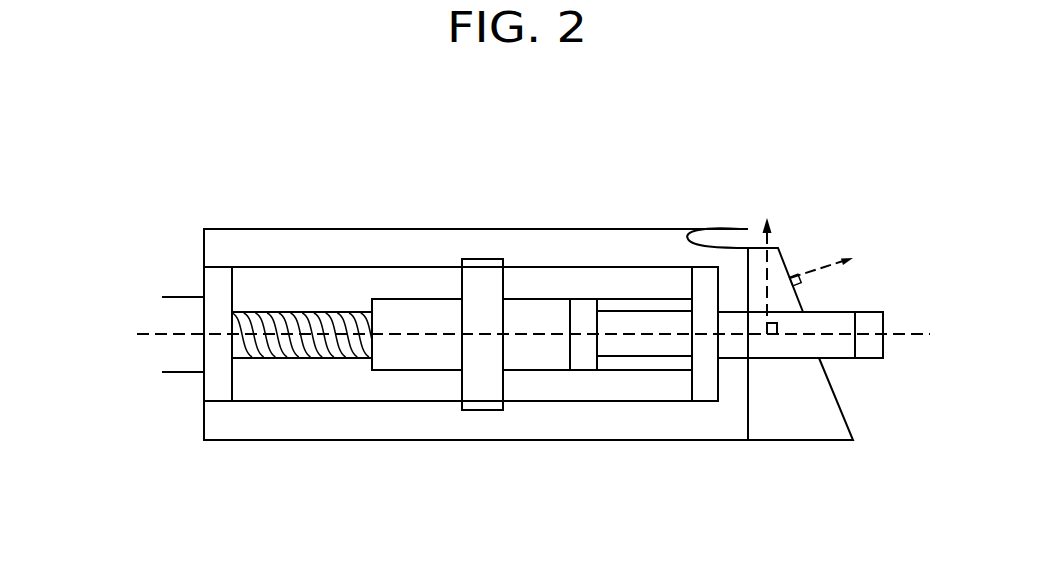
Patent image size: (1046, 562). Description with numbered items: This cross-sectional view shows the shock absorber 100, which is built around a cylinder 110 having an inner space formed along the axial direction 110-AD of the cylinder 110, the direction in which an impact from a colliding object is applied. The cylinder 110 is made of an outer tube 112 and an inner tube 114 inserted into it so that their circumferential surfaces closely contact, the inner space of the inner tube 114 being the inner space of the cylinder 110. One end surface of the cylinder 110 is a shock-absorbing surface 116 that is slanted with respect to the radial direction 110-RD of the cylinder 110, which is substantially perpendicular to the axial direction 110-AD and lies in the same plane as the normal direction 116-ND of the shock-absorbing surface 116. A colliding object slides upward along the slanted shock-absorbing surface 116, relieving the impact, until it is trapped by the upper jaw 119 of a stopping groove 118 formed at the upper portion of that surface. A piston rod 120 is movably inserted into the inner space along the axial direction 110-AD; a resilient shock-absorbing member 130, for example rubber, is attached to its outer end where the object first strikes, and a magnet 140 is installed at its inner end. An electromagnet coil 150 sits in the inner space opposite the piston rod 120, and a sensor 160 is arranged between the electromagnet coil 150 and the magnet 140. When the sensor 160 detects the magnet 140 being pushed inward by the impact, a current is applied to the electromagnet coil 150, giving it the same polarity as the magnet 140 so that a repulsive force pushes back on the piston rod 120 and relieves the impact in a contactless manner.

The shock absorber 100 is at (880, 154).
The cylinder 110 is at (120, 232).
The outer tube 112 is at (204, 246).
The inner tube 114 is at (232, 277).
The shock-absorbing surface 116 is at (785, 248).
The stopping groove 118 is at (740, 240).
The upper jaw 119 is at (713, 229).
The piston rod 120 is at (807, 343).
The shock-absorbing member 130 is at (870, 343).
The magnet 140 is at (585, 355).
The electromagnet coil 150 is at (312, 347).
The sensor 160 is at (487, 275).
The normal direction of the shock-absorbing surface 116-ND is at (863, 264).
The radial direction of the cylinder 110-RD is at (767, 299).
The axial direction of the cylinder 110-AD is at (137, 337).